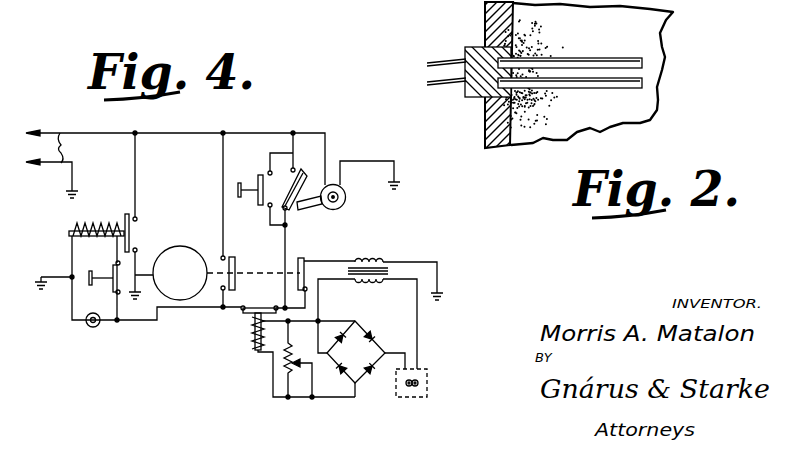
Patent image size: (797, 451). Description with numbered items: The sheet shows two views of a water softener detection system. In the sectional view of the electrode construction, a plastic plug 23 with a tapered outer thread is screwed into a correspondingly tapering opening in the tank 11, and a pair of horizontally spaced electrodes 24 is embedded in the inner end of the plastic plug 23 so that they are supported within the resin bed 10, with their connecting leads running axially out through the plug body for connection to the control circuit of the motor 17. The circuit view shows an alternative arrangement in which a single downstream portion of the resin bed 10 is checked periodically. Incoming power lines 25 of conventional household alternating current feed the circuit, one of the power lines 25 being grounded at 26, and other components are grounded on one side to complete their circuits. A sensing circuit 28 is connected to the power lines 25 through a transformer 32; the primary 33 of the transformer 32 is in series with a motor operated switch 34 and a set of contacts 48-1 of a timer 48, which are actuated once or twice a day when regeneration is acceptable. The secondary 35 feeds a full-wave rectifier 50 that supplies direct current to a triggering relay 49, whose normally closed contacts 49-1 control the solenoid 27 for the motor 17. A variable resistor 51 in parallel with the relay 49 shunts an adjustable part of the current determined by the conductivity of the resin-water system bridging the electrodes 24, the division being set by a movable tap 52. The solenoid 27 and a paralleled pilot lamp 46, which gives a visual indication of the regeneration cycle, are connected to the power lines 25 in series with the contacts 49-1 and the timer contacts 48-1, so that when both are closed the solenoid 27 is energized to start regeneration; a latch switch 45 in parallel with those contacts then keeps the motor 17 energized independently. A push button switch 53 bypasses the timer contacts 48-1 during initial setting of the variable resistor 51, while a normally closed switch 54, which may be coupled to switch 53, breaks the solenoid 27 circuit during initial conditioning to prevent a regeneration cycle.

In FIG. 2, the resin bed 10 is at (537, 105).
In FIG. 2, the tank 11 is at (483, 123).
In FIG. 4, the motor 17 is at (185, 247).
In FIG. 2, the plastic plug 23 is at (468, 52).
In FIG. 4, the electrodes 24 is at (412, 397).
In FIG. 2, the electrodes 24 is at (600, 85).
In FIG. 4, the power lines 25 is at (57, 159).
In FIG. 4, the ground 26 is at (79, 190).
In FIG. 4, the solenoid 27 is at (90, 220).
In FIG. 4, the sensing circuit 28 is at (426, 340).
In FIG. 4, the transformer 32 is at (389, 268).
In FIG. 4, the primary 33 is at (367, 256).
In FIG. 4, the motor operated switch 34 is at (307, 262).
In FIG. 4, the secondary 35 is at (368, 283).
In FIG. 4, the latch switch 45 is at (239, 263).
In FIG. 4, the pilot lamp 46 is at (96, 328).
In FIG. 4, the timer 48 is at (345, 199).
In FIG. 4, the timer contacts 48-1 is at (296, 168).
In FIG. 4, the triggering relay 49 is at (248, 335).
In FIG. 4, the normally closed contacts 49-1 is at (268, 308).
In FIG. 4, the full-wave rectifier 50 is at (364, 360).
In FIG. 4, the variable resistor 51 is at (293, 348).
In FIG. 4, the movable tap 52 is at (306, 364).
In FIG. 4, the push button switch 53 is at (261, 177).
In FIG. 4, the normally closed switch 54 is at (106, 272).